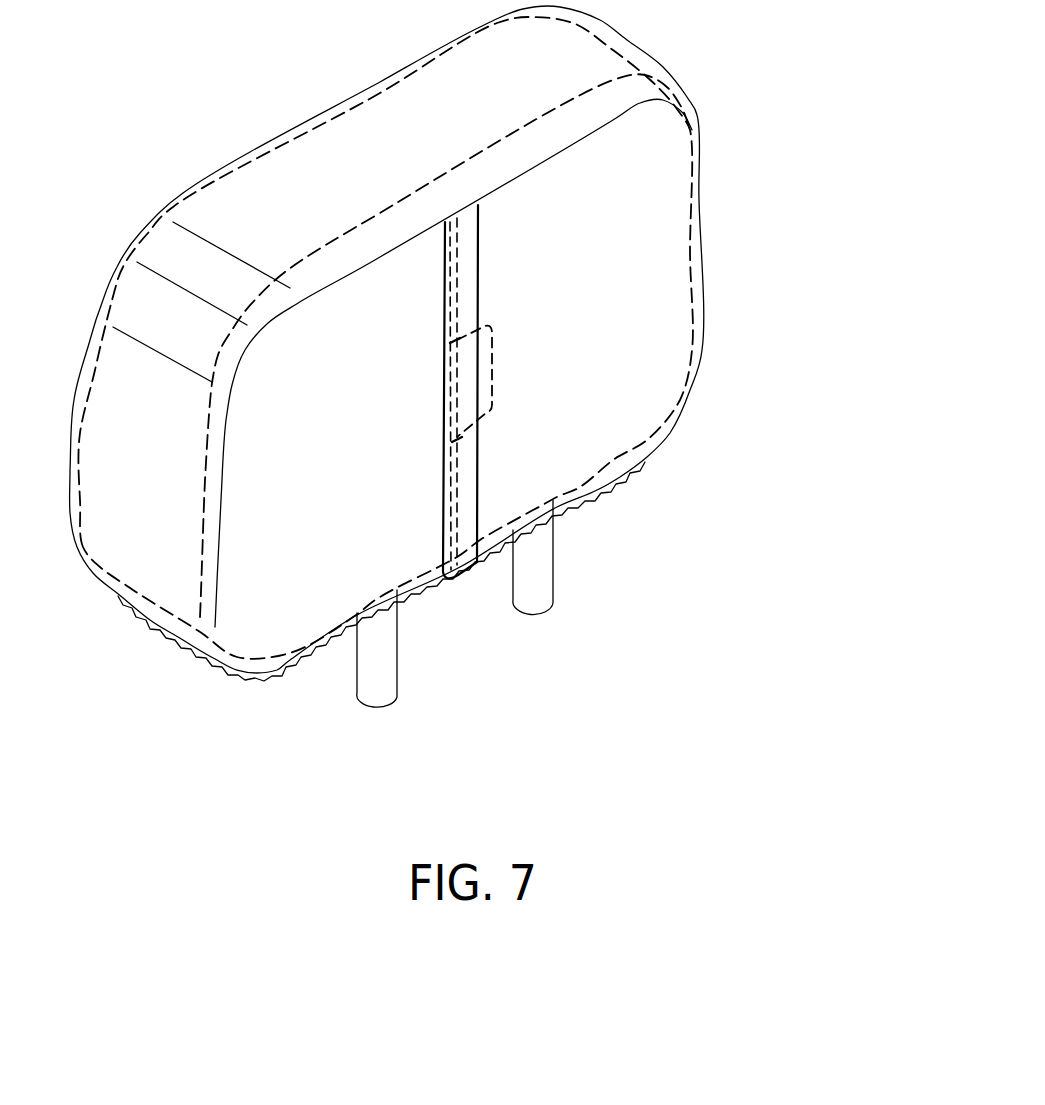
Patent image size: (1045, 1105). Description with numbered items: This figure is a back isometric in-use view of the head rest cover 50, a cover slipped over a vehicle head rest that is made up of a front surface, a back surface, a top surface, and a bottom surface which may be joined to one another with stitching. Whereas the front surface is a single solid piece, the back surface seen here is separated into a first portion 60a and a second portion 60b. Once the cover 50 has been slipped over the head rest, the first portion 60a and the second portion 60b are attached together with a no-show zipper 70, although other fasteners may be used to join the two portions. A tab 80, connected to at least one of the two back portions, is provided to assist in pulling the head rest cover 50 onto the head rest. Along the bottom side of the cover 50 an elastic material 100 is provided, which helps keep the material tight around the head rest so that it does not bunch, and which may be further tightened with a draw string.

The head rest cover 50 is at (175, 88).
The first back part of head rest cover 60a is at (658, 163).
The second back part of head rest cover 60b is at (282, 610).
The zipper 70 is at (478, 260).
The tab 80 is at (492, 367).
The elastic 100 is at (560, 510).